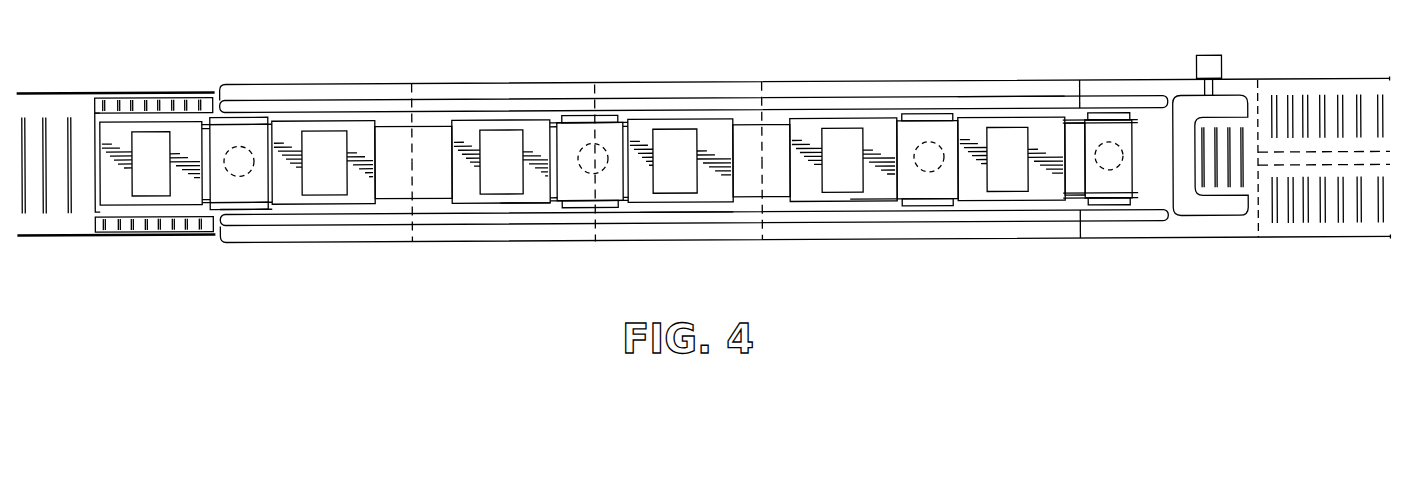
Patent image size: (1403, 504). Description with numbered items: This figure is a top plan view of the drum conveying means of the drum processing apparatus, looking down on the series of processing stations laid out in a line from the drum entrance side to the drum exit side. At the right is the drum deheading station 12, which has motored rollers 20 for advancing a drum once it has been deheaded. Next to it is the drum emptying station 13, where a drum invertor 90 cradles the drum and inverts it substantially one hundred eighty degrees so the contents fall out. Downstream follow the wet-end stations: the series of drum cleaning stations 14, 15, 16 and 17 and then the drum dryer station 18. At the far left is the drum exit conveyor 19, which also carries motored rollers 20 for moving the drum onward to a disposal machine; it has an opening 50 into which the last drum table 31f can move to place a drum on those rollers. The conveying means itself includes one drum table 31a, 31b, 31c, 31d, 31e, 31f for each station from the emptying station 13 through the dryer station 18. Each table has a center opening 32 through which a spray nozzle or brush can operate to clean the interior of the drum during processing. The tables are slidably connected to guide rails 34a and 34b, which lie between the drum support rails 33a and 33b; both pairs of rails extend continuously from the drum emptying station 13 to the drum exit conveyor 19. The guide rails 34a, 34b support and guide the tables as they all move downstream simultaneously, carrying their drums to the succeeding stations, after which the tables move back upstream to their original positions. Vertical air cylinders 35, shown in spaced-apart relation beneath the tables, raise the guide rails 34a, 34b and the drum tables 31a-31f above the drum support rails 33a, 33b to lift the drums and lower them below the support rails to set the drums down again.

The drum deheading station 12 is at (1268, 91).
The drum emptying station 13 is at (1157, 84).
The drum cleaning station 14 is at (990, 96).
The drum cleaning station 15 is at (865, 201).
The drum cleaning station 16 is at (675, 210).
The drum cleaning station 17 is at (520, 204).
The drum dryer station 18 is at (270, 207).
The drum exit conveyor 19 is at (78, 90).
The motored rollers 20 is at (100, 229).
The drum table 31a is at (975, 192).
The drum table 31b is at (808, 191).
The drum table 31c is at (640, 190).
The drum table 31d is at (470, 194).
The drum table 31e is at (295, 193).
The drum table 31f is at (178, 195).
The center opening 32 is at (322, 133).
The drum support rail 33a is at (357, 223).
The drum support rail 33b is at (360, 101).
The guide rail 34a is at (420, 203).
The guide rail 34b is at (420, 124).
The vertical air cylinder 35 is at (239, 145).
The opening 50 is at (160, 117).
The drum invertor 90 is at (1198, 211).